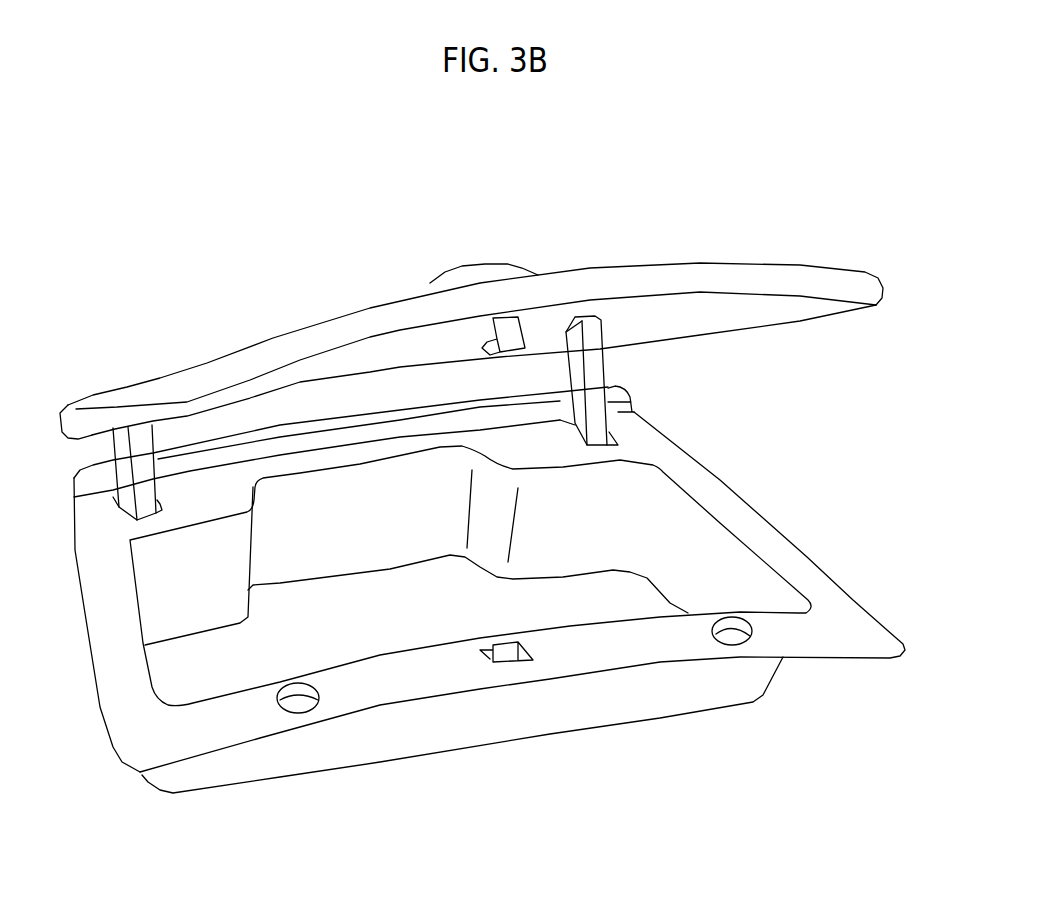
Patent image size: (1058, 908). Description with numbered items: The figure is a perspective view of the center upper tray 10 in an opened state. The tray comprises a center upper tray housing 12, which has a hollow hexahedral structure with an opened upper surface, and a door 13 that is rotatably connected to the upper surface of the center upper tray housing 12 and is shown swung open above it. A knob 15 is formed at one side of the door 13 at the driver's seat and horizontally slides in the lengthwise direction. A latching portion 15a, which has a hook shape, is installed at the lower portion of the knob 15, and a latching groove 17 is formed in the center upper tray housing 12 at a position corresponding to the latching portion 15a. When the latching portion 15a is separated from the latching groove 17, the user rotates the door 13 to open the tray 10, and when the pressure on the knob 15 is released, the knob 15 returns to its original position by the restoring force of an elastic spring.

The tray 10 is at (852, 216).
The center upper tray housing 12 is at (667, 690).
The door 13 is at (288, 348).
The knob 15 is at (488, 275).
The latching portion 15a is at (483, 343).
The latching groove 17 is at (490, 660).